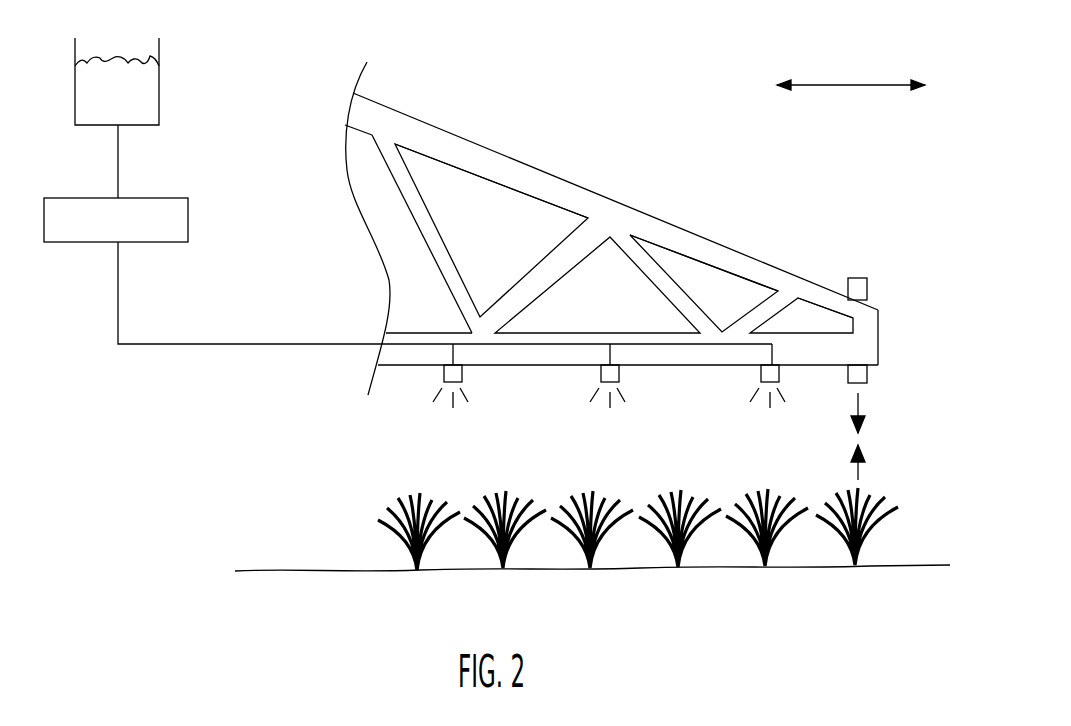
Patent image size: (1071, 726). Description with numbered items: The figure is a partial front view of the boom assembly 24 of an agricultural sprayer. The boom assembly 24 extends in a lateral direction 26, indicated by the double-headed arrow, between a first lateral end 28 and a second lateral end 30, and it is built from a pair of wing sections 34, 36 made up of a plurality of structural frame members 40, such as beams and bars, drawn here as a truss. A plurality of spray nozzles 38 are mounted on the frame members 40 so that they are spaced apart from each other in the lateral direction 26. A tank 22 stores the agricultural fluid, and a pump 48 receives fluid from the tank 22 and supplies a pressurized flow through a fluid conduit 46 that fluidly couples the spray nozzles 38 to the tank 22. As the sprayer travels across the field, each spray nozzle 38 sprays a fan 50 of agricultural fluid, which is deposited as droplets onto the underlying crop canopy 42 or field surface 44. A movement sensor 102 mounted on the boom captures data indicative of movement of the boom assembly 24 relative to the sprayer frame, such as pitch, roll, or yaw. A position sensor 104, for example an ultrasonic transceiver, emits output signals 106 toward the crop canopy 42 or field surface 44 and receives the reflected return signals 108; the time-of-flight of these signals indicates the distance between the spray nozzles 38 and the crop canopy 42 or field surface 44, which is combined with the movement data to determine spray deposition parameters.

The tank 22 is at (160, 95).
The pump 48 is at (188, 218).
The fluid conduit 46 is at (263, 346).
The boom assembly 24 is at (463, 82).
The first wing section 34 is at (611, 205).
The second wing section 36 is at (506, 147).
The structural frame members 40 is at (532, 265).
The first lateral end 28 is at (866, 317).
The second lateral end 30 is at (825, 337).
The lateral direction 26 is at (850, 84).
The movement sensor 102 is at (860, 278).
The position sensor 104 is at (867, 373).
The output signals 106 is at (860, 403).
The return signals 108 is at (860, 468).
The spray nozzles 38 is at (441, 370).
The fan 50 is at (452, 422).
The crop canopy 42 is at (396, 487).
The field surface 44 is at (312, 570).